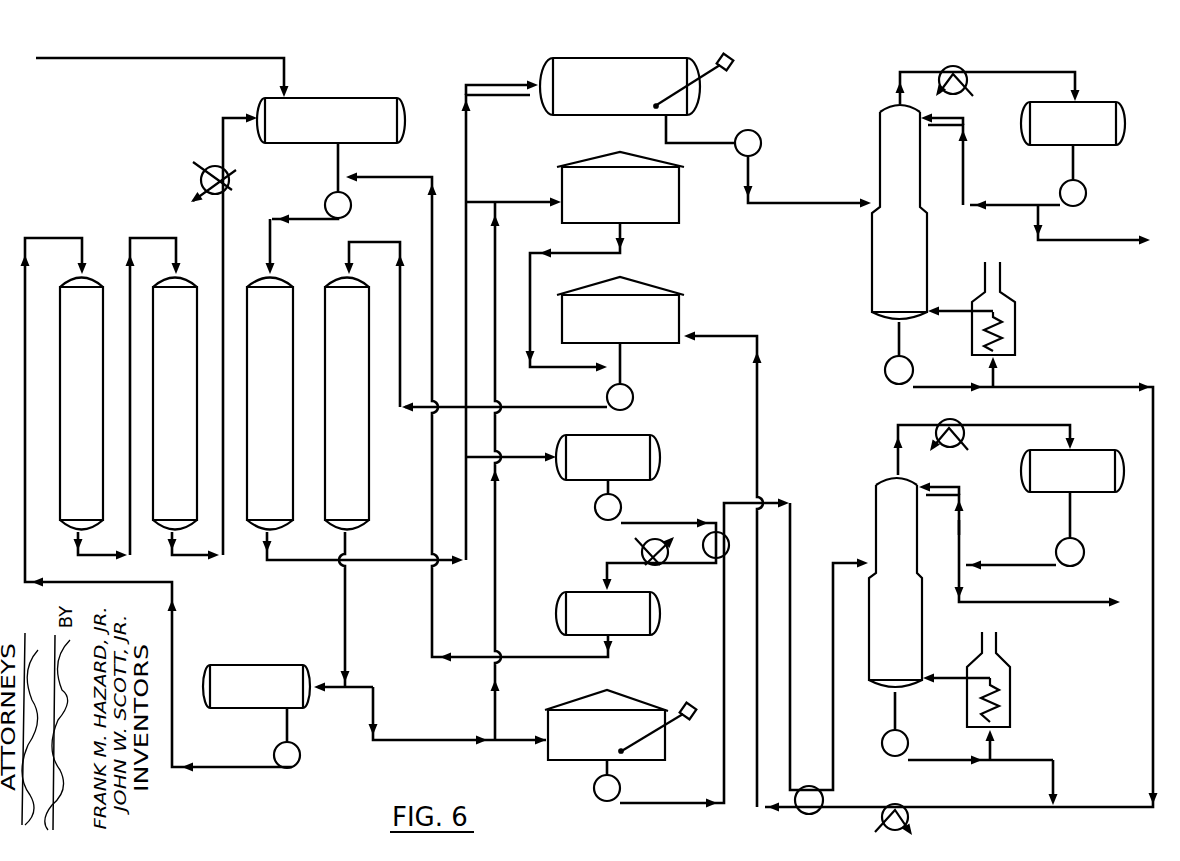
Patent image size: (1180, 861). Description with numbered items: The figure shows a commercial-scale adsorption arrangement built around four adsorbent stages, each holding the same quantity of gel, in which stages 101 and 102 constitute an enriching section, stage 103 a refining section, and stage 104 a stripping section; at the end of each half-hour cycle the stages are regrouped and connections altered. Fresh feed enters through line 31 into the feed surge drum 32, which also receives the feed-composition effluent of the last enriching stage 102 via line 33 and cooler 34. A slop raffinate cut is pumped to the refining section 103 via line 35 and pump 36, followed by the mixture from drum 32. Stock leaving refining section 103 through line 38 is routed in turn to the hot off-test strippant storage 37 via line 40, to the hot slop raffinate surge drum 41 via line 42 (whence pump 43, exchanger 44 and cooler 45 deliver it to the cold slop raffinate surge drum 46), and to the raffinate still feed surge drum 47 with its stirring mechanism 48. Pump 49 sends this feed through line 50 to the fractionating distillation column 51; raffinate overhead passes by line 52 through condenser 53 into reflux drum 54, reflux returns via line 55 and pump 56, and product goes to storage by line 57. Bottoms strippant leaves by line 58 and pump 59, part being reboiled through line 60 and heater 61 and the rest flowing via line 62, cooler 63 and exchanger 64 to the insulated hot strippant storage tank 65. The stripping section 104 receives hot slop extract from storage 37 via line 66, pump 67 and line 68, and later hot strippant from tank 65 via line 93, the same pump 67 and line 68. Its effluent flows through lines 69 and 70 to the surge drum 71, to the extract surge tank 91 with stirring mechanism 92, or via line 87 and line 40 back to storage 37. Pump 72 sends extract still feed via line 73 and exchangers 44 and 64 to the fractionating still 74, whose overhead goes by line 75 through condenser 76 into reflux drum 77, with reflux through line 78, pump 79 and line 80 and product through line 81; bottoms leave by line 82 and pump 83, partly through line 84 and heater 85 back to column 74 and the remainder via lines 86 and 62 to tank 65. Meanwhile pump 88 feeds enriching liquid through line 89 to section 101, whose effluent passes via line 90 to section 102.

The line 31 is at (90, 60).
The feed surge drum 32 is at (352, 99).
The line 33 is at (223, 552).
The cooler 34 is at (228, 184).
The line 35 is at (412, 176).
The pump 36 is at (328, 180).
The hot off-test strippant storage 37 is at (684, 206).
The line 38 is at (305, 562).
The line 40 is at (521, 198).
The hot slop raffinate surge drum 41 is at (662, 443).
The line 42 is at (525, 460).
The pump 43 is at (597, 517).
The exchanger 44 is at (714, 528).
The cooler 45 is at (650, 568).
The cold slop raffinate surge drum 46 is at (658, 618).
The raffinate still feed surge drum 47 is at (573, 116).
The stirring mechanism 48 is at (731, 64).
The pump 49 is at (758, 133).
The line 50 is at (810, 206).
The fractionating distillation column 51 is at (870, 255).
The line 52 is at (908, 66).
The condenser 53 is at (960, 66).
The reflux drum 54 is at (1106, 102).
The line 55 is at (1077, 157).
The pump 56 is at (1090, 203).
The line 57 is at (1118, 240).
The line 58 is at (897, 338).
The pump 59 is at (889, 381).
The line 60 is at (999, 373).
The heater 61 is at (1010, 292).
The line 62 is at (758, 400).
The cooler 63 is at (910, 818).
The exchanger 64 is at (808, 813).
The insulated hot strippant storage tank 65 is at (681, 300).
The line 66 is at (556, 368).
The pump 67 is at (631, 404).
The line 68 is at (386, 243).
The line 69 is at (349, 610).
The line 70 is at (420, 744).
The surge drum 71 is at (238, 712).
The pump 72 is at (602, 801).
The line 73 is at (600, 767).
The fractionating still 74 is at (925, 625).
The line 75 is at (893, 461).
The condenser 76 is at (962, 422).
The reflux drum 77 is at (1108, 455).
The line 78 is at (1073, 517).
The pump 79 is at (1082, 550).
The line 80 is at (962, 521).
The line 81 is at (1083, 603).
The line 82 is at (892, 725).
The pump 83 is at (888, 742).
The line 84 is at (953, 758).
The heater 85 is at (1007, 660).
The line 86 is at (1040, 760).
The line 87 is at (497, 557).
The pump 88 is at (298, 765).
The line 89 is at (61, 236).
The line 90 is at (155, 237).
The extract surge tank 91 is at (554, 705).
The stirring mechanism 92 is at (684, 725).
The line 93 is at (622, 350).
The second enriching section 101 is at (62, 534).
The first enriching section 102 is at (155, 534).
The refining section 103 is at (293, 286).
The stripping section 104 is at (368, 518).